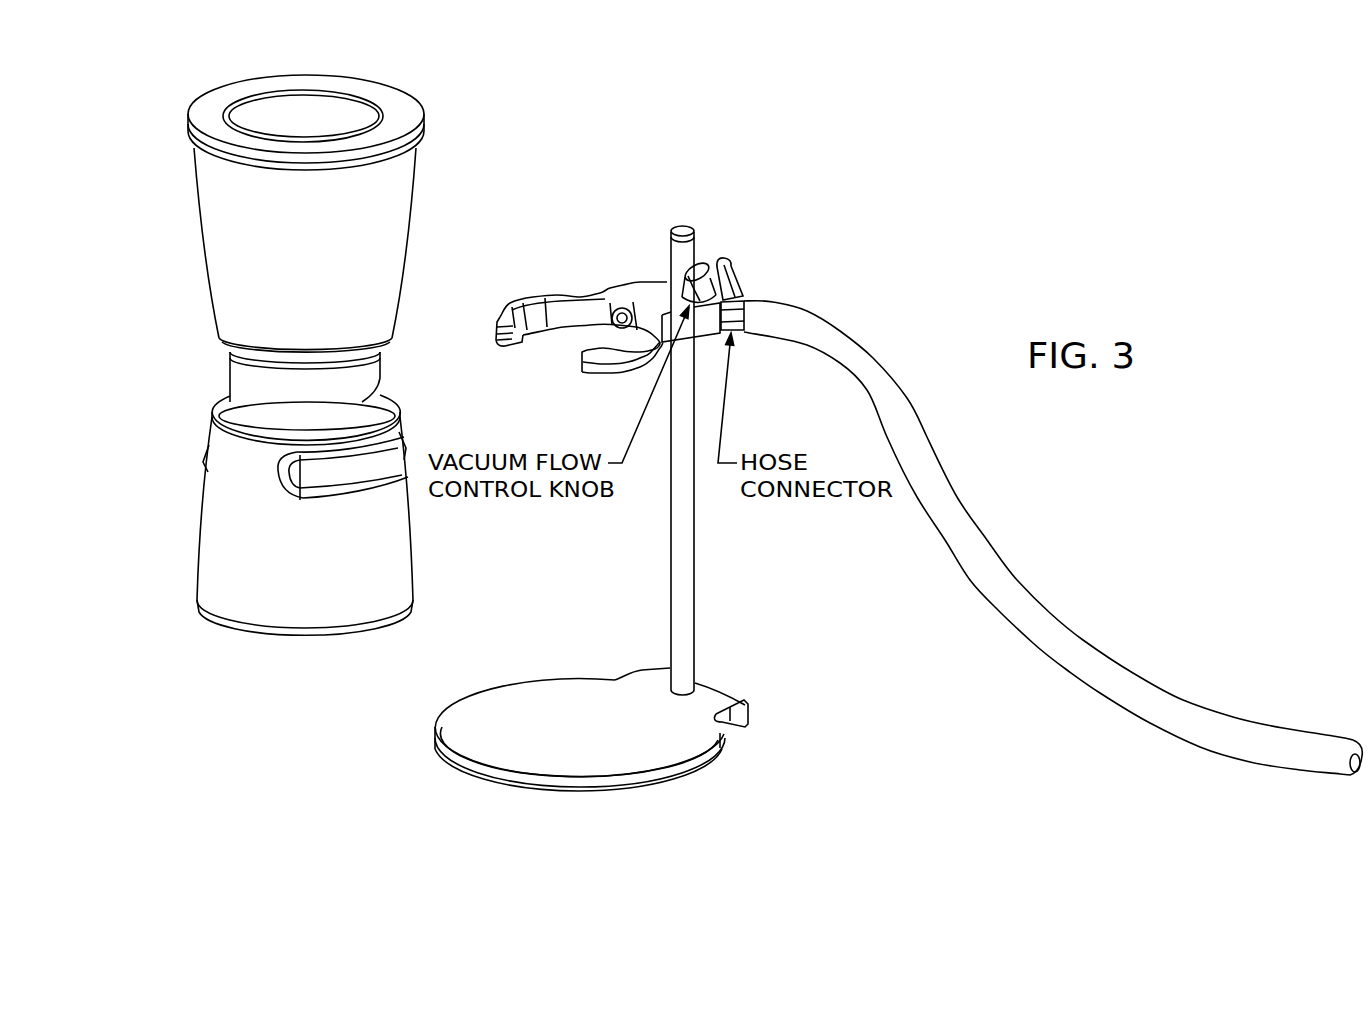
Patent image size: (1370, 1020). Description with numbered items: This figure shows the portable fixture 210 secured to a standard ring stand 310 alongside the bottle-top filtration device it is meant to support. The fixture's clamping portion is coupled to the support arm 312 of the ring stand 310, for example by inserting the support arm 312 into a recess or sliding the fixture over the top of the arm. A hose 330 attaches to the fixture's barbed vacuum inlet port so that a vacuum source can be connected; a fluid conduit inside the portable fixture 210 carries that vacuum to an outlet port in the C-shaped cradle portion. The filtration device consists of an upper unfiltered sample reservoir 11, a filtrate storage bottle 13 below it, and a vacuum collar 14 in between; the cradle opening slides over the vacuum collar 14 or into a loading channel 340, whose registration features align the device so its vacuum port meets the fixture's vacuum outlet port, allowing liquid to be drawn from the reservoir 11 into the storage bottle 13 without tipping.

The upper unfiltered sample reservoir 11 is at (292, 264).
The filtrate storage bottle 13 is at (320, 576).
The vacuum collar 14 is at (234, 376).
The loading channel 340 is at (389, 368).
The portable fixture 210 is at (634, 292).
The ring stand 310 is at (563, 745).
The support arm 312 is at (699, 590).
The hose 330 is at (979, 556).